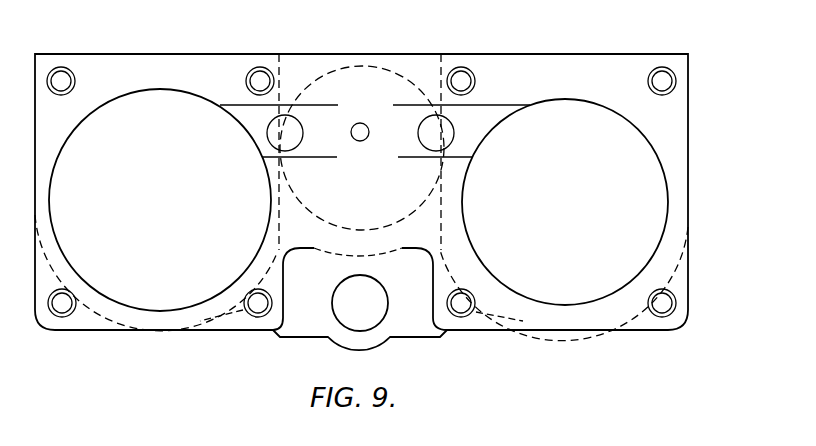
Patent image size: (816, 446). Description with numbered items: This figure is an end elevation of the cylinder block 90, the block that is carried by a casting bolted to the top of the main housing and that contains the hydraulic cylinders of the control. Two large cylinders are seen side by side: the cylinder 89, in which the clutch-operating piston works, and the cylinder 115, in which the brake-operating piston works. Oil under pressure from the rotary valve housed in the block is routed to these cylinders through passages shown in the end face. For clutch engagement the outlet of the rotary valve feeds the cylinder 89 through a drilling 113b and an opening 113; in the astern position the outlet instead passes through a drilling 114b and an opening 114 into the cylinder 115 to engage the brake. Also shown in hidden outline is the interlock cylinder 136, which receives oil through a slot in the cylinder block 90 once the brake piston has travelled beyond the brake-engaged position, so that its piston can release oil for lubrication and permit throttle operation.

The cylinder block 90 is at (617, 68).
The cylinder 115 is at (151, 293).
The cylinder 89 is at (553, 278).
The opening 114 is at (257, 113).
The opening 113 is at (472, 118).
The drilling 114b is at (298, 135).
The drilling 113b is at (420, 128).
The interlock cylinder 136 is at (363, 64).